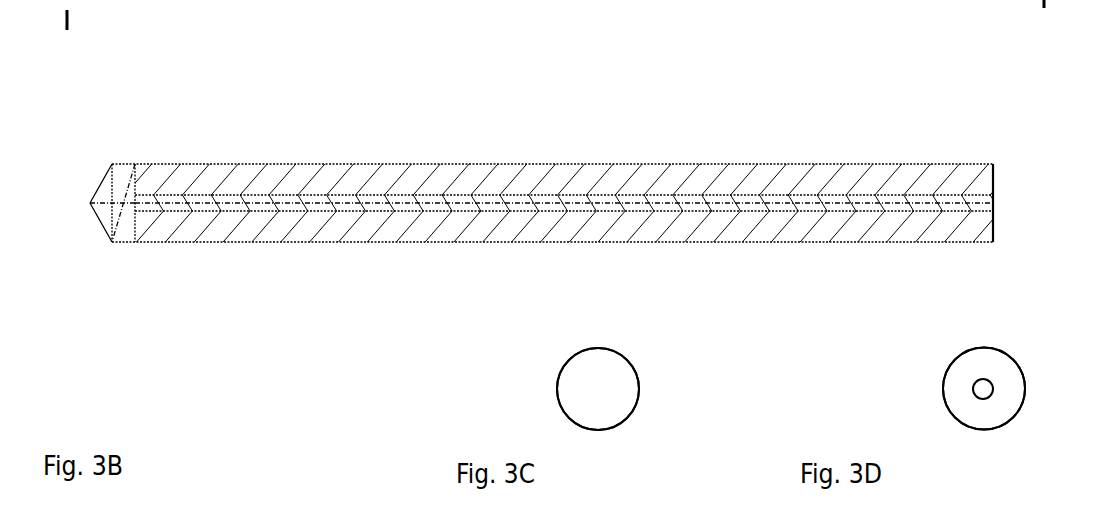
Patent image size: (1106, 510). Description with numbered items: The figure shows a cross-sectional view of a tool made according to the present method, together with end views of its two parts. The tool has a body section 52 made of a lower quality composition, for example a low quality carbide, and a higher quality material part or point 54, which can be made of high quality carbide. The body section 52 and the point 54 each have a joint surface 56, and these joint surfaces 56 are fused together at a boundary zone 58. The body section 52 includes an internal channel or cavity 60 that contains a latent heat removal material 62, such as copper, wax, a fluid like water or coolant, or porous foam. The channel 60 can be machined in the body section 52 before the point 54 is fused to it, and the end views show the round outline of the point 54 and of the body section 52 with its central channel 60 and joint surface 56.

In FIG. 3B, the body section 52 is at (396, 162).
In FIG. 3D, the body section 52 is at (1018, 351).
In FIG. 3B, the point 54 is at (115, 180).
In FIG. 3C, the point 54 is at (561, 356).
In FIG. 3C, the joint surface 56 is at (620, 398).
In FIG. 3D, the joint surface 56 is at (963, 398).
In FIG. 3B, the boundary zone 58 is at (134, 242).
In FIG. 3B, the internal channel 60 is at (681, 199).
In FIG. 3D, the internal channel 60 is at (975, 387).
In FIG. 3B, the latent heat removal material 62 is at (296, 209).